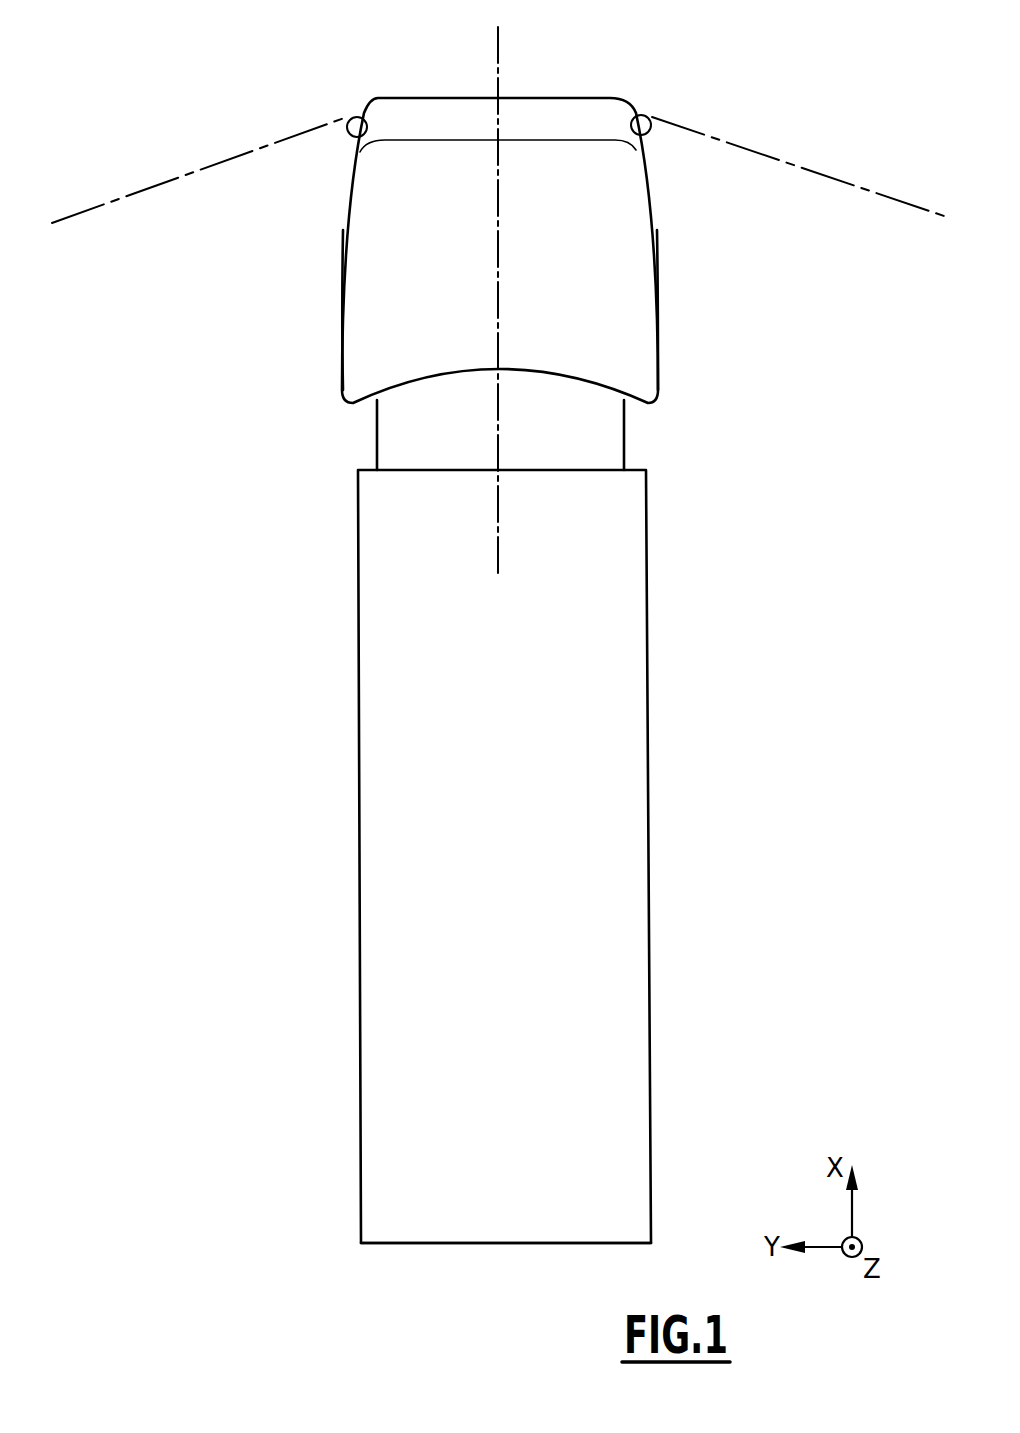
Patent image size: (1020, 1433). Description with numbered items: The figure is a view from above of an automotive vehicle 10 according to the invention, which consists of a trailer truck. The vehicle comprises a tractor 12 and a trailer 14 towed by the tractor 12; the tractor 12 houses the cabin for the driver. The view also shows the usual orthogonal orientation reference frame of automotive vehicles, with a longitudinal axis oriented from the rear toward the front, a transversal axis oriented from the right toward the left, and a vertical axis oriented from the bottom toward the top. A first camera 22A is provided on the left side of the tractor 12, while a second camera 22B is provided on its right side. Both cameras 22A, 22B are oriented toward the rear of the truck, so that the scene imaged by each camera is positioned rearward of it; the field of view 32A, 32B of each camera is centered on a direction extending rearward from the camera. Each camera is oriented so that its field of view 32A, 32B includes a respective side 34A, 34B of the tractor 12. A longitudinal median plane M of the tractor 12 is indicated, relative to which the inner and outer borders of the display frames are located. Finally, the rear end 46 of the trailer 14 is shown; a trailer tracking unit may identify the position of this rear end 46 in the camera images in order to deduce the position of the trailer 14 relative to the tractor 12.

The automotive vehicle 10 is at (134, 127).
The tractor 12 is at (375, 305).
The trailer 14 is at (415, 825).
The first camera 22A is at (356, 117).
The second camera 22B is at (643, 112).
The field of view 32A is at (293, 170).
The field of view 32B is at (775, 195).
The side of the tractor 34A is at (340, 242).
The side of the tractor 34B is at (660, 259).
The rear end 46 is at (462, 1245).
The longitudinal median plane M is at (498, 52).